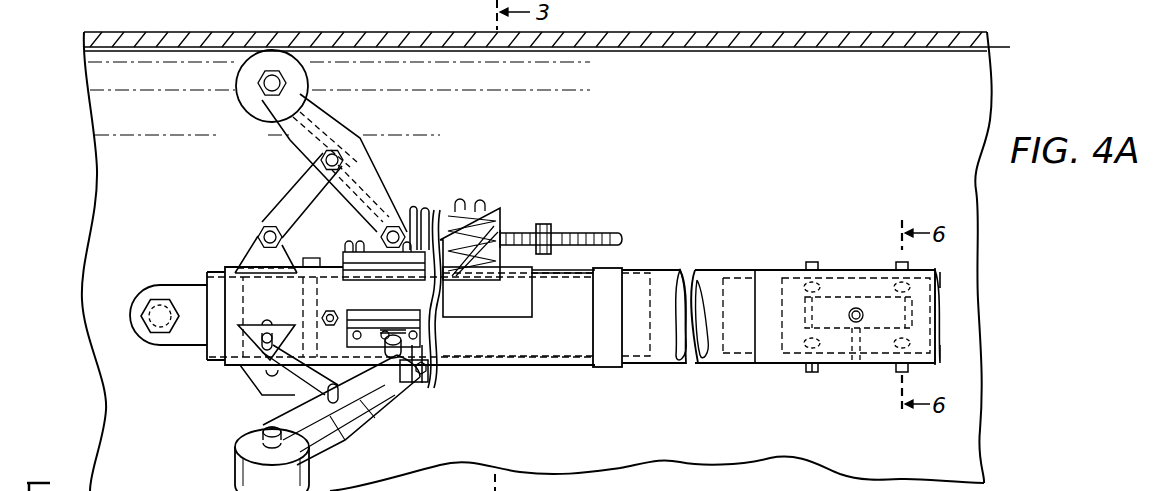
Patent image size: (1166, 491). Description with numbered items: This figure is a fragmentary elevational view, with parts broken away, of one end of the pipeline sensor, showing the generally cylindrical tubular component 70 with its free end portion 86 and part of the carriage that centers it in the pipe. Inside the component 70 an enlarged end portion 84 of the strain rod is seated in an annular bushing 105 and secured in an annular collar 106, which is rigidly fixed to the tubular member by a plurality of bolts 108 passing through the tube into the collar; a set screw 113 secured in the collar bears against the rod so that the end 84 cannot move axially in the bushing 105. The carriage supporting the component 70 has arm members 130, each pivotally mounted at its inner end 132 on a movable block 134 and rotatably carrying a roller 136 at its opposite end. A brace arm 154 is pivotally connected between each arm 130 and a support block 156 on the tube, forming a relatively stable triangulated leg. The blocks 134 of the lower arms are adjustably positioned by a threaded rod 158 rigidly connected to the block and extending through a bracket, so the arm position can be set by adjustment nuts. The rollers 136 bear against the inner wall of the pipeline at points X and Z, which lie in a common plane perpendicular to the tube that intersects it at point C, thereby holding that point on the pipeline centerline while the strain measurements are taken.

The roller 136 is at (308, 82).
The arm member 130 is at (384, 175).
The brace arm 154 is at (292, 190).
The support block 156 is at (247, 240).
The inner end of arm 132 is at (378, 240).
The movable block 134 is at (410, 216).
The threaded rod 158 is at (430, 348).
The free end portion 86 is at (216, 368).
The tubular component 70 is at (746, 270).
The enlarged end portion of beam 84 is at (831, 305).
The annular collar 106 is at (896, 288).
The bolt 108 is at (810, 372).
The set screw 113 is at (855, 322).
The annular bushing 105 is at (886, 352).
The centerline point C is at (262, 300).
The contact point X is at (268, 50).
The contact point Z is at (262, 480).